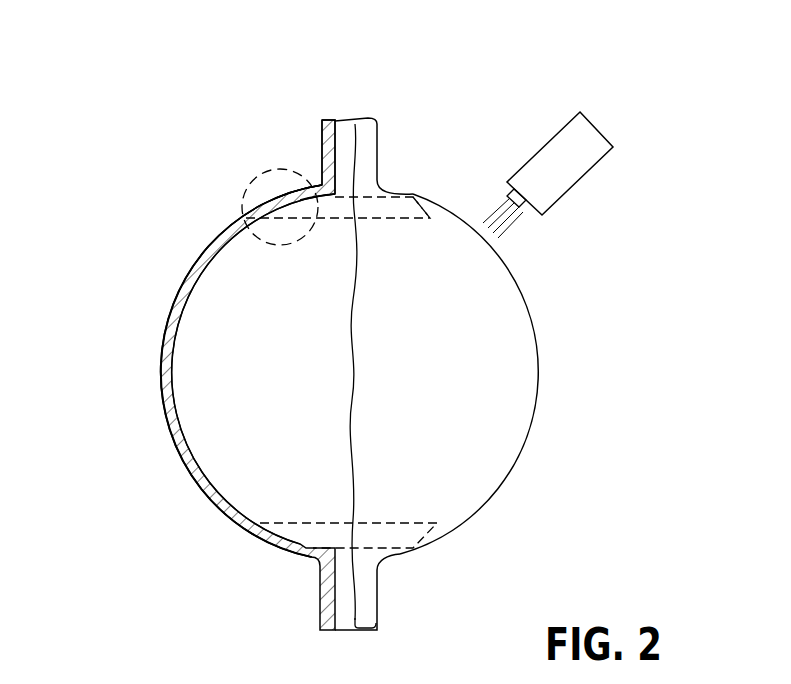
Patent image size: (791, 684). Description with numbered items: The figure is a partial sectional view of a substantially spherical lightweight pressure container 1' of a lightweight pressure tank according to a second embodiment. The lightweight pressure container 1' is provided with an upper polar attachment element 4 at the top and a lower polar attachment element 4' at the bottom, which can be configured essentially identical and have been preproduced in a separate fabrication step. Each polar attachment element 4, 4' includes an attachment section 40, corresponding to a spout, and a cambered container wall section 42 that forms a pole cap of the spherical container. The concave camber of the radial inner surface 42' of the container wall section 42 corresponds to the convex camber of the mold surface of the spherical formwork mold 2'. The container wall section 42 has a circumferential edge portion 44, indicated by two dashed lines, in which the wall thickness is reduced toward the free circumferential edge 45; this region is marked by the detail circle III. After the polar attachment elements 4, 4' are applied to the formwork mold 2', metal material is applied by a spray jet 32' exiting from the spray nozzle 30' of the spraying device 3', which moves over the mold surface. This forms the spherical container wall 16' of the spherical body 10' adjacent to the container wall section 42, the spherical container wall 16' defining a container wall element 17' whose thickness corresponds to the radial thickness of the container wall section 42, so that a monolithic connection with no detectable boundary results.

The lightweight pressure container 1' is at (314, 345).
The formwork mold 2' is at (292, 525).
The spraying device 3' is at (585, 129).
The upper polar attachment element 4 is at (389, 122).
The lower polar attachment element 4' is at (411, 592).
The spherical body 10' is at (199, 369).
The spherical container wall 16' is at (186, 375).
The container wall element 17' is at (185, 371).
The spray nozzle 30' is at (562, 233).
The spray jet 32' is at (534, 257).
The attachment section 40 is at (321, 140).
The container wall section 42 is at (277, 135).
The radial inner surface 42' is at (316, 254).
The circumferential edge portion 44 is at (387, 218).
The free circumferential edge 45 is at (432, 219).
The detail III is at (250, 182).